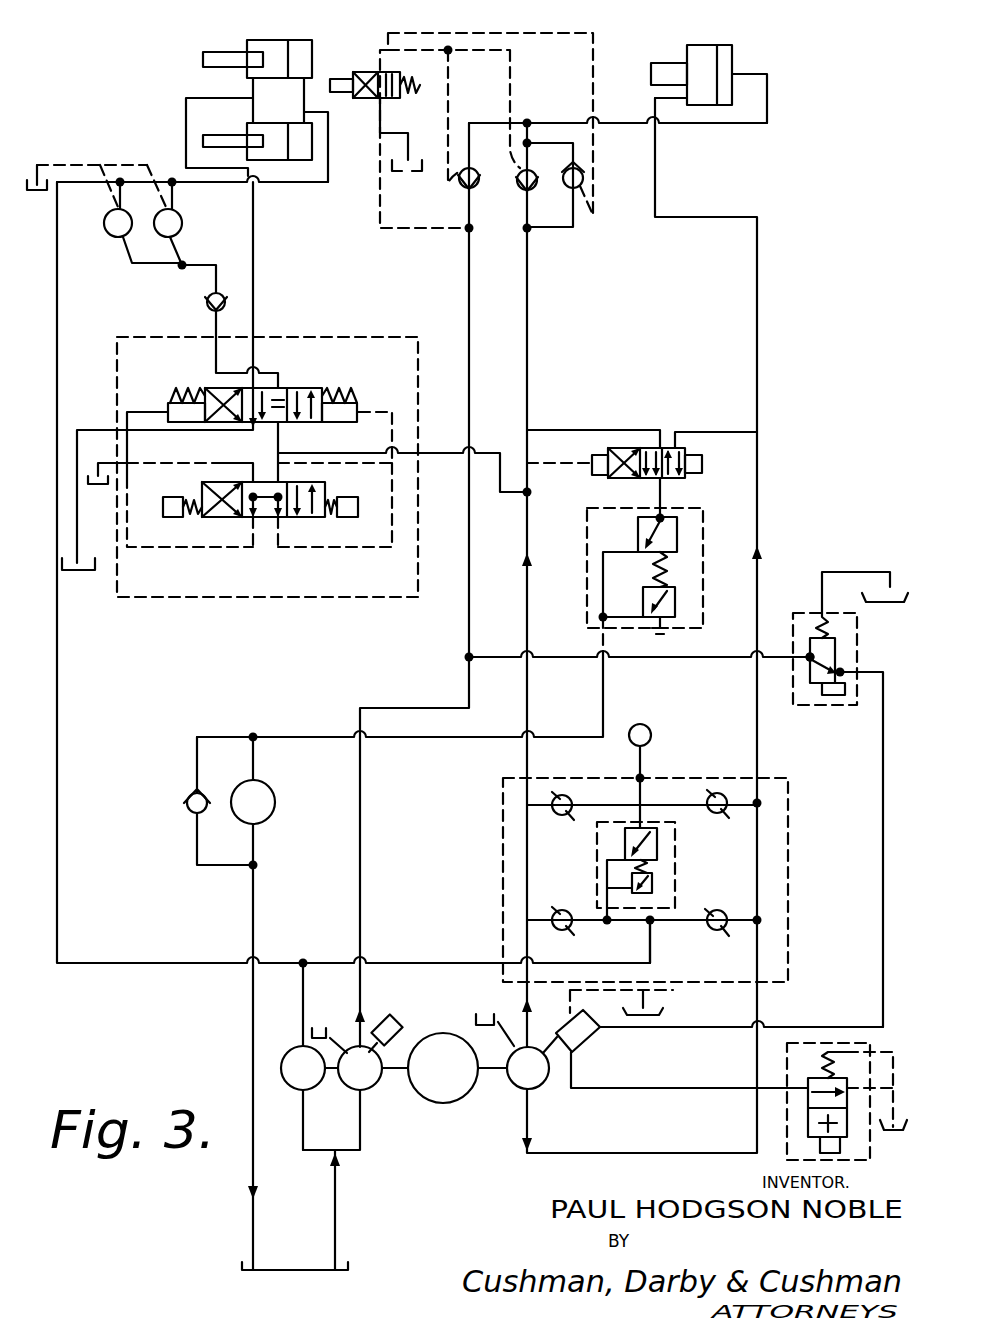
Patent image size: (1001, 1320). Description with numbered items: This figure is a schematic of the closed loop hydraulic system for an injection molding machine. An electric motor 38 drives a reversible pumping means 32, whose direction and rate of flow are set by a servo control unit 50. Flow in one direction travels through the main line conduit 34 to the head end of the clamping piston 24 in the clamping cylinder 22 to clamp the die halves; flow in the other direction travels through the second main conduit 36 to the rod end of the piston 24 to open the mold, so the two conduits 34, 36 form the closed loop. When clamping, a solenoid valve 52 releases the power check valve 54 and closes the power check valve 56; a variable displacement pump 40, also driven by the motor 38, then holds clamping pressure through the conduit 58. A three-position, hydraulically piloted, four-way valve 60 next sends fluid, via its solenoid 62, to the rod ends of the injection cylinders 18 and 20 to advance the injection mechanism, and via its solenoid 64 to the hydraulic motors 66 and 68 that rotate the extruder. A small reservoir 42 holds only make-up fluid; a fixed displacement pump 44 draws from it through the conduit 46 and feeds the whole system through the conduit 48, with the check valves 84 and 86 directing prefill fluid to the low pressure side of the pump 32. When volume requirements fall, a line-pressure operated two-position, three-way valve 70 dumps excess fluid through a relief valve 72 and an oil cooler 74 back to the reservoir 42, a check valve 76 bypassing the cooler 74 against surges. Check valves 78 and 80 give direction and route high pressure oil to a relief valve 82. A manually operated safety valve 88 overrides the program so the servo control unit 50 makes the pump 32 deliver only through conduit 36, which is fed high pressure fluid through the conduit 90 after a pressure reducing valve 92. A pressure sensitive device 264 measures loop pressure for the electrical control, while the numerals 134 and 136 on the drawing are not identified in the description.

The injection cylinder 18 is at (300, 40).
The injection cylinder 20 is at (291, 172).
The clamping cylinder 22 is at (742, 63).
The clamping piston 24 is at (710, 52).
The reversible pumping means 32 is at (517, 1100).
The main line conduit 34 is at (769, 118).
The second main conduit 36 is at (657, 178).
The electric motor 38 is at (433, 1104).
The variable displacement pump 40 is at (352, 1087).
The reservoir 42 is at (283, 1272).
The fixed displacement pump 44 is at (295, 1087).
The conduit 46 is at (337, 1218).
The conduit 48 is at (305, 1000).
The servo control unit 50 is at (597, 1040).
The solenoid valve 52 is at (367, 60).
The power check valve 54 is at (474, 190).
The power check valve 56 is at (566, 190).
The conduit 58 is at (471, 316).
The three-position hydraulically piloted four-way valve 60 is at (156, 604).
The solenoid 62 is at (170, 522).
The solenoid 64 is at (345, 518).
The hydraulic motor 66 is at (113, 240).
The hydraulic motor 68 is at (182, 223).
The two-position three-way valve 70 is at (601, 486).
The relief valve 72 is at (712, 536).
The oil cooler 74 is at (262, 790).
The check valve 76 is at (190, 812).
The check valve 78 is at (566, 818).
The check valve 80 is at (713, 815).
The relief valve 82 is at (685, 880).
The check valve 84 is at (552, 932).
The check valve 86 is at (712, 935).
The manually operated safety valve 88 is at (778, 1151).
The conduit 90 is at (883, 854).
The pressure reducing valve 92 is at (828, 714).
The reservoir 134 is at (661, 1008).
The fluid line 136 is at (650, 1092).
The pressure sensitive device 264 is at (651, 737).